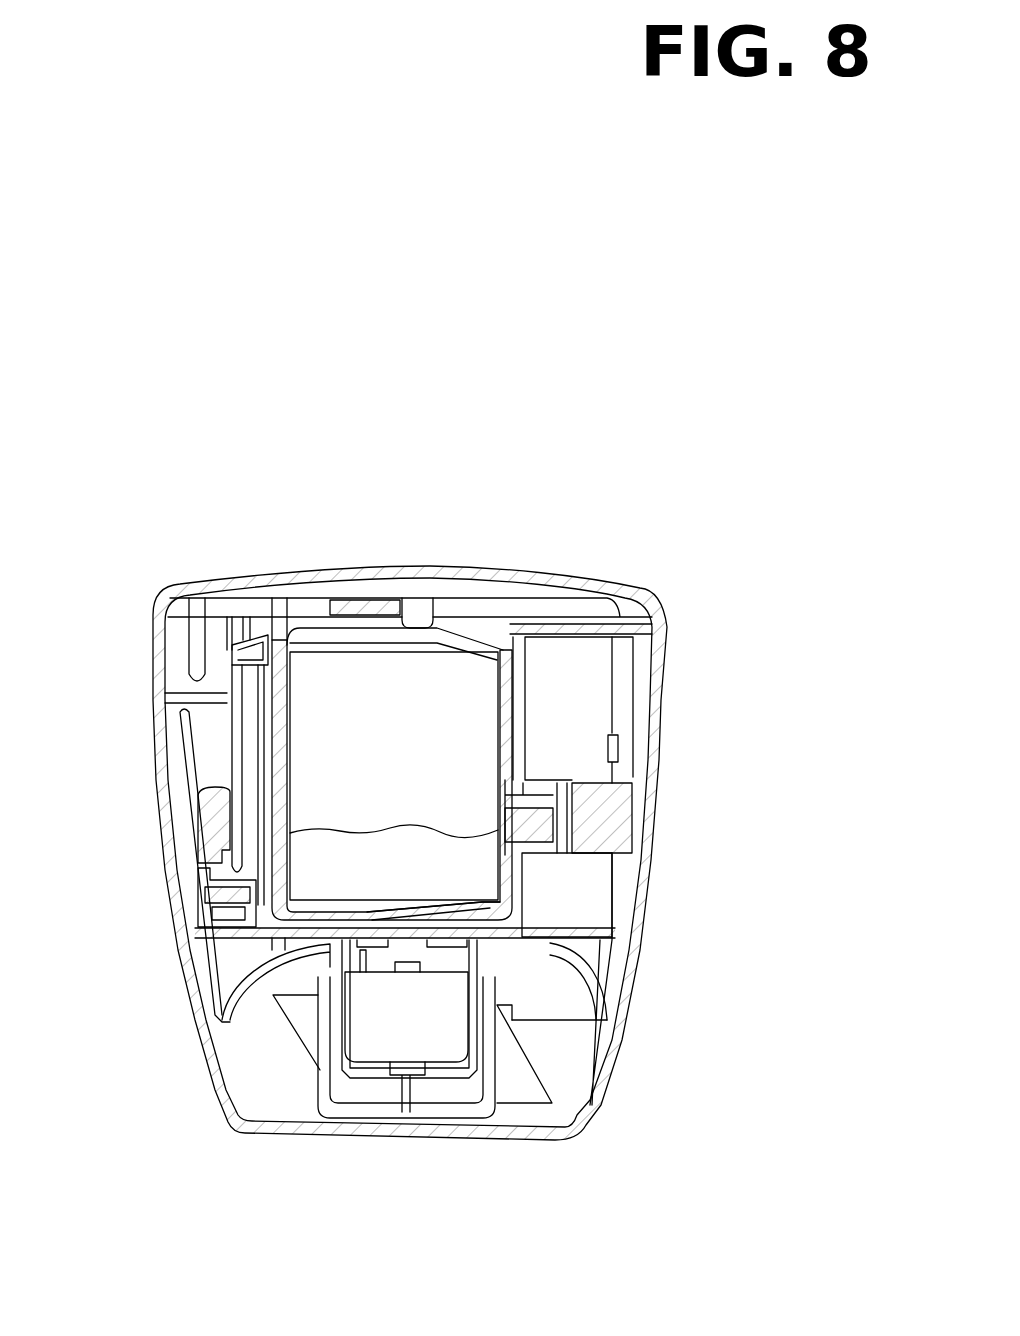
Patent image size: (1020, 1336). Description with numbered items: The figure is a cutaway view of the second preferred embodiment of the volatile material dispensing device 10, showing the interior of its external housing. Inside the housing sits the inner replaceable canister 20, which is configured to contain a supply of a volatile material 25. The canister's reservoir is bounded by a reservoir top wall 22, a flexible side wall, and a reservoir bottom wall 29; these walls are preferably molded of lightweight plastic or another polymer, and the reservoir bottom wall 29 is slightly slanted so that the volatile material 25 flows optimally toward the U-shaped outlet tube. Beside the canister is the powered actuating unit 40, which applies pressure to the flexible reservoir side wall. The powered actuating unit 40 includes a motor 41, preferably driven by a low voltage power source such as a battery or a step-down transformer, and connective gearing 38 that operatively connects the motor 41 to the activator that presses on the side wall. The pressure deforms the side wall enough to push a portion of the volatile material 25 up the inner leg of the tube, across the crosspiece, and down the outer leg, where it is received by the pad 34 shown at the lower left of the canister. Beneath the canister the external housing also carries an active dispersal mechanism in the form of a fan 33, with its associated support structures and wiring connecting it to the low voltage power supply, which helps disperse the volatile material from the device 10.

The volatile material dispensing device 10 is at (587, 302).
The inner replaceable canister 20 is at (423, 563).
The reservoir top wall 22 is at (457, 633).
The volatile material 25 is at (377, 828).
The reservoir bottom wall 29 is at (449, 908).
The fan 33 is at (413, 1025).
The pad 34 is at (220, 897).
The connective gearing 38 is at (570, 705).
The powered actuating unit 40 is at (590, 527).
The motor 41 is at (565, 865).